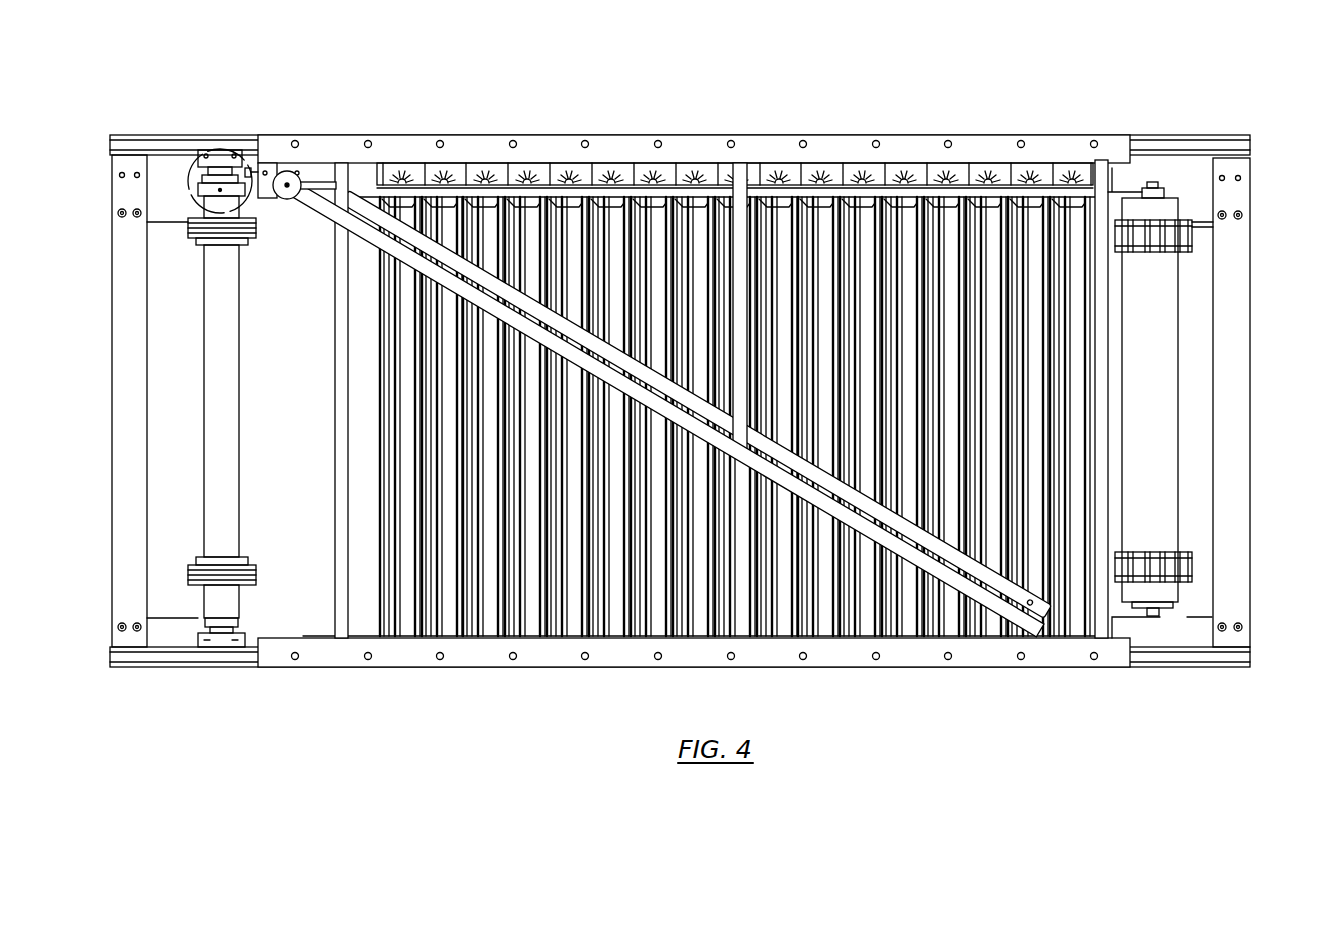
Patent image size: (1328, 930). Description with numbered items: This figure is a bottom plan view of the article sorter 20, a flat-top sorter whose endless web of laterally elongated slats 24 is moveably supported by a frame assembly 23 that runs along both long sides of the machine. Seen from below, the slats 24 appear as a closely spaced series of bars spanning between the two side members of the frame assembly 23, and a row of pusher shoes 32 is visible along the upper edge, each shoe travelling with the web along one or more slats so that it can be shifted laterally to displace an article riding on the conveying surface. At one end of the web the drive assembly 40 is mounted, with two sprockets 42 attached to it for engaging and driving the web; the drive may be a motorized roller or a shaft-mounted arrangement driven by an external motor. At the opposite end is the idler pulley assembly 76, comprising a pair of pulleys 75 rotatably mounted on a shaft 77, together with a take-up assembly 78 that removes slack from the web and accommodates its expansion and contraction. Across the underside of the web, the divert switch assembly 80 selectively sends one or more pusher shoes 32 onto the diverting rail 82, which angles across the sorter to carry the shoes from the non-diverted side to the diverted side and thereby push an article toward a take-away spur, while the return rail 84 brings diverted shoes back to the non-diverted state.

The article sorter 20 is at (904, 136).
The frame assembly 23 is at (986, 140).
The slats 24 is at (440, 605).
The pusher shoes 32 is at (405, 173).
The drive assembly 40 is at (1207, 403).
The sprocket 42 is at (1195, 237).
The pulleys 75 is at (190, 228).
The idler pulley assembly 76 is at (168, 370).
The shaft 77 is at (242, 412).
The take-up assembly 78 is at (195, 158).
The divert switch assembly 80 is at (283, 170).
The diverting rail 82 is at (368, 190).
The return rail 84 is at (315, 178).